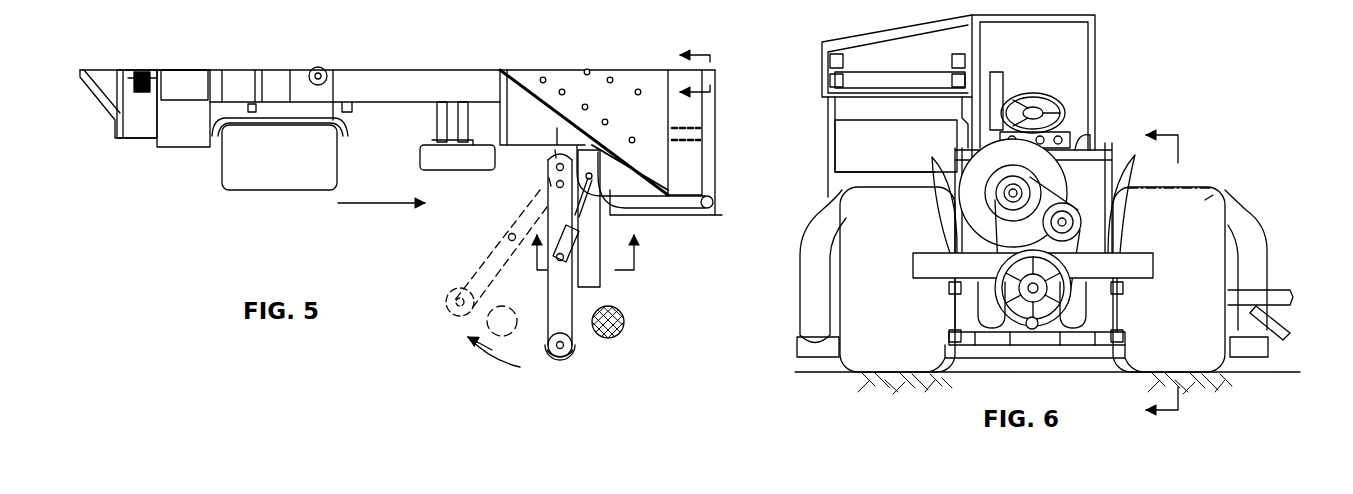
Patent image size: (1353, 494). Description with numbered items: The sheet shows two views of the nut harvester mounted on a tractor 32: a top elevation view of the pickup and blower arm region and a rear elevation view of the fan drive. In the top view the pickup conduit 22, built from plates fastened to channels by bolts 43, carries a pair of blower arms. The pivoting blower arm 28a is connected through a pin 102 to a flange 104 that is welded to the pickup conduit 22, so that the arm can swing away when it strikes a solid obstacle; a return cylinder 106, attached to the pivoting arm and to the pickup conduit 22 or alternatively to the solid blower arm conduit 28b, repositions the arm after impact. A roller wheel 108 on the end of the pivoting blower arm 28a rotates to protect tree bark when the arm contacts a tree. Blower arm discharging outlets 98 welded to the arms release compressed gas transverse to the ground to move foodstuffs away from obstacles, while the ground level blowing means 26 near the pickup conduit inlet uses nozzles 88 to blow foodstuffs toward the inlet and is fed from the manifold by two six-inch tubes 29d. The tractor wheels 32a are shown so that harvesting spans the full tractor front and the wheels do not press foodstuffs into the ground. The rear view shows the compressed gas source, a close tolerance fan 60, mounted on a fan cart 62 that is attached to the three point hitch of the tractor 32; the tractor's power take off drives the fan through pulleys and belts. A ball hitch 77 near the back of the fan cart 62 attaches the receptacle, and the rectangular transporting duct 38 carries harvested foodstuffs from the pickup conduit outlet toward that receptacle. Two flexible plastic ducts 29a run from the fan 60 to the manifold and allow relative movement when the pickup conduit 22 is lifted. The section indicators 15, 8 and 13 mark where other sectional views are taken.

In FIG. 5, the pickup conduit 22 is at (608, 66).
In FIG. 5, the bolts 43 is at (586, 69).
In FIG. 5, the section line 15 is at (719, 74).
In FIG. 5, the ground level blowing means 26 is at (722, 140).
In FIG. 6, the ground level blowing means 26 is at (794, 347).
In FIG. 5, the six-inch diameter tubes 29d is at (708, 198).
In FIG. 6, the six-inch diameter tubes 29d is at (800, 284).
In FIG. 5, the solid blower arm conduit 28b is at (610, 228).
In FIG. 5, the return cylinder 106 is at (600, 292).
In FIG. 5, the pivoting blower arm 28a is at (573, 320).
In FIG. 6, the pivoting blower arm 28a is at (1270, 300).
In FIG. 5, the roller wheel 108 is at (564, 355).
In FIG. 5, the tractor wheels 32a is at (288, 178).
In FIG. 6, the tractor wheels 32a is at (1207, 198).
In FIG. 5, the flange 104 is at (553, 152).
In FIG. 5, the pin 102 is at (549, 178).
In FIG. 5, the section line 8 is at (584, 265).
In FIG. 6, the rectangular transporting duct 38 is at (886, 70).
In FIG. 6, the close tolerance fan 60 is at (1050, 166).
In FIG. 6, the tractor 32 is at (1168, 97).
In FIG. 6, the section line 13 is at (1181, 274).
In FIG. 6, the fan cart 62 is at (932, 266).
In FIG. 6, the ball hitch 77 is at (1028, 322).
In FIG. 6, the flexible plastic ducts 29a is at (1085, 302).
In FIG. 6, the blower arm discharging outlets 98 is at (1285, 325).
In FIG. 6, the nozzles 88 is at (1266, 358).